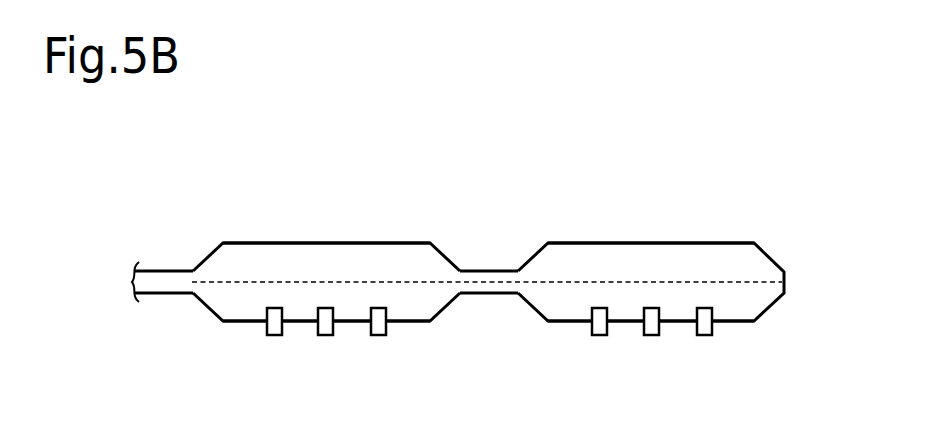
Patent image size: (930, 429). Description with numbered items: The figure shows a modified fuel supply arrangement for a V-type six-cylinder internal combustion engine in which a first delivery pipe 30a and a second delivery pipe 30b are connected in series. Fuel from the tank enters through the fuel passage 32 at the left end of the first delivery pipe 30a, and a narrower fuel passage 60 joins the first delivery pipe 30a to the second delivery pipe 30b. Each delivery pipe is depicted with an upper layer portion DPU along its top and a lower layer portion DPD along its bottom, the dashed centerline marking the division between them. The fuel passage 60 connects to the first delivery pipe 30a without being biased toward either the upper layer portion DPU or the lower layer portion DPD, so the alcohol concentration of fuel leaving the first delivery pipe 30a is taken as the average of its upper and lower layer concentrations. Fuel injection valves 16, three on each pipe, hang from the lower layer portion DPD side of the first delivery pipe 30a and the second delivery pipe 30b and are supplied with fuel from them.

The fuel passage 32 is at (165, 271).
The first delivery pipe 30a is at (283, 243).
The second delivery pipe 30b is at (608, 243).
The fuel passage 60 is at (488, 271).
The fuel injection valve 16 is at (378, 336).
The upper layer portion DPU is at (422, 245).
The lower layer portion DPD is at (423, 319).